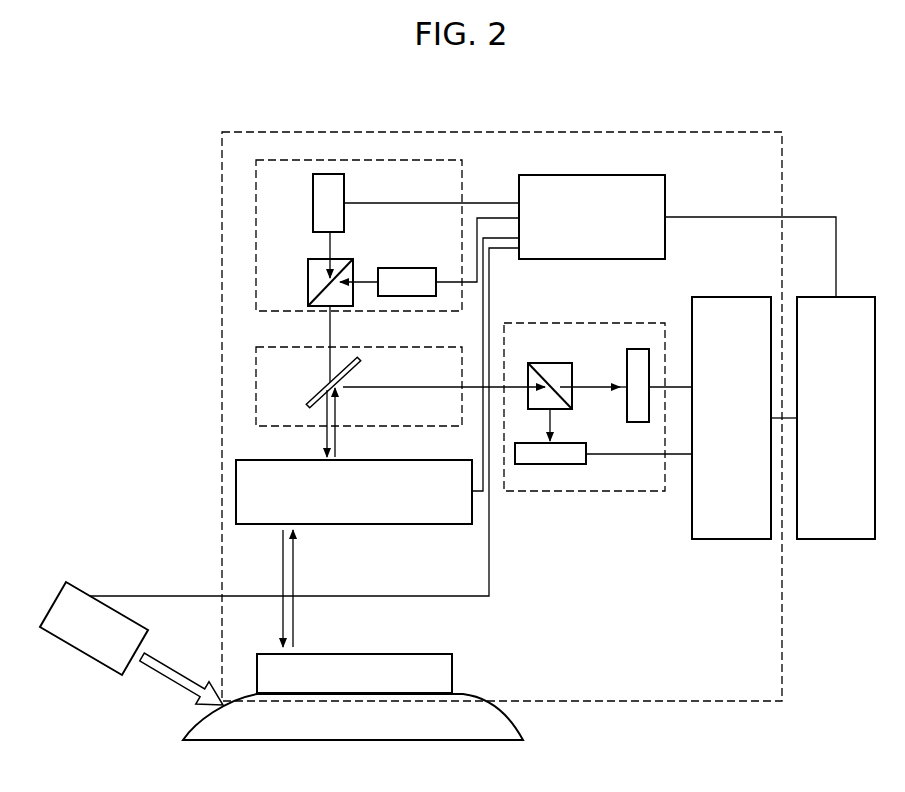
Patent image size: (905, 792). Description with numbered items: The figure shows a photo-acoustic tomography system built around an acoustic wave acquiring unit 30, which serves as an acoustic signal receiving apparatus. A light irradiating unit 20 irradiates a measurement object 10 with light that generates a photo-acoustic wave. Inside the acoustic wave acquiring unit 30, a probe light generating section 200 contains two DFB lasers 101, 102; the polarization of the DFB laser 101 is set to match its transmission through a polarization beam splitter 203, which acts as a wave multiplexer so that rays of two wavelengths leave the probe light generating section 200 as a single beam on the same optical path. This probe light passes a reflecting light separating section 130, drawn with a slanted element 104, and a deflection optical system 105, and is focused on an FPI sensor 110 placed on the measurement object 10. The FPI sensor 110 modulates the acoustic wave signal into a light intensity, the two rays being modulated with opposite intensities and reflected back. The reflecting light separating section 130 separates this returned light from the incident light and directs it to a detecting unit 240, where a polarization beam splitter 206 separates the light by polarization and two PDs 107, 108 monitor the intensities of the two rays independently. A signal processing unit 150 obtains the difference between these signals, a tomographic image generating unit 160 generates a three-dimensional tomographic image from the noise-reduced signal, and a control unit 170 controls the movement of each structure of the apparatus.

The measurement object 10 is at (495, 722).
The light irradiating unit 20 is at (62, 628).
The acoustic wave acquiring unit 30 is at (260, 131).
The DFB laser 101 is at (318, 186).
The DFB laser 102 is at (410, 268).
The mirror 104 is at (360, 362).
The deflection optical system 105 is at (296, 460).
The PD 107 is at (636, 349).
The PD 108 is at (578, 462).
The FPI sensor 110 is at (440, 674).
The reflecting light separating section 130 is at (296, 347).
The signal processing unit 150 is at (750, 297).
The tomographic image generating unit 160 is at (860, 297).
The control unit 170 is at (666, 183).
The probe light generating section 200 is at (291, 160).
The polarization beam splitter 203 is at (343, 261).
The polarization beam splitter 206 is at (571, 352).
The detecting unit 240 is at (540, 322).